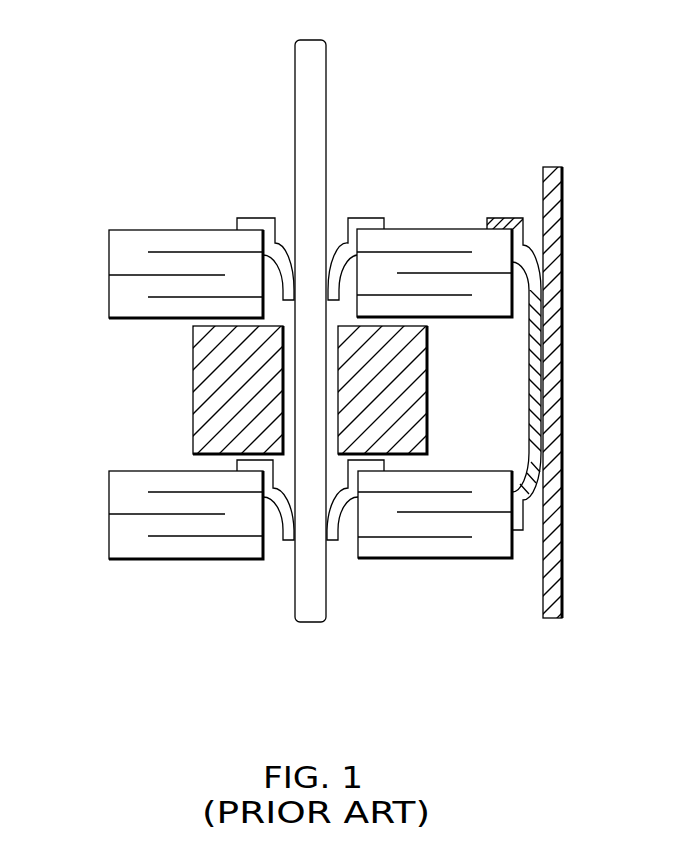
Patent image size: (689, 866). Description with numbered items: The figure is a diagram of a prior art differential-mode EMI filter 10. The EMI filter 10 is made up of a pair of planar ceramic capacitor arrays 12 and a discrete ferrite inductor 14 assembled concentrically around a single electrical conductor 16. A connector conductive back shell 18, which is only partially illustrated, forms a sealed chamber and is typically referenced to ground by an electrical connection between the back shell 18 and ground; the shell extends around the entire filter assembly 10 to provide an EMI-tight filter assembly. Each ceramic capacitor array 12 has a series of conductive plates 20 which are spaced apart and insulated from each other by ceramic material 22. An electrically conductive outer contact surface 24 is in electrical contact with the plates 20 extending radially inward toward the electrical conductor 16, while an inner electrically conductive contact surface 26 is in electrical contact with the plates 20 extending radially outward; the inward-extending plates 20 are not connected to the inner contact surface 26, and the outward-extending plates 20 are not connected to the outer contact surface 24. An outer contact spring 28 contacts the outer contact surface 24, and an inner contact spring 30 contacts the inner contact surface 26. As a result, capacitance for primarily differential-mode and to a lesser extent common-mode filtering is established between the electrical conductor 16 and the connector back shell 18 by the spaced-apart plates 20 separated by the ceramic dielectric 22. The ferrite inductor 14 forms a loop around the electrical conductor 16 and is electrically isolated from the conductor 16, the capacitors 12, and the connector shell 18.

The differential-mode EMI filter 10 is at (443, 107).
The planar ceramic capacitor arrays 12 is at (473, 228).
The discrete ferrite inductor 14 is at (192, 405).
The electrical conductor 16 is at (294, 97).
The connector conductive back shell 18 is at (562, 603).
The conductive plates 20 is at (137, 240).
The ceramic material 22 is at (125, 268).
The outer contact surface 24 is at (510, 292).
The inner contact surface 26 is at (360, 276).
The outer contact spring 28 is at (541, 493).
The inner contact spring 30 is at (351, 220).